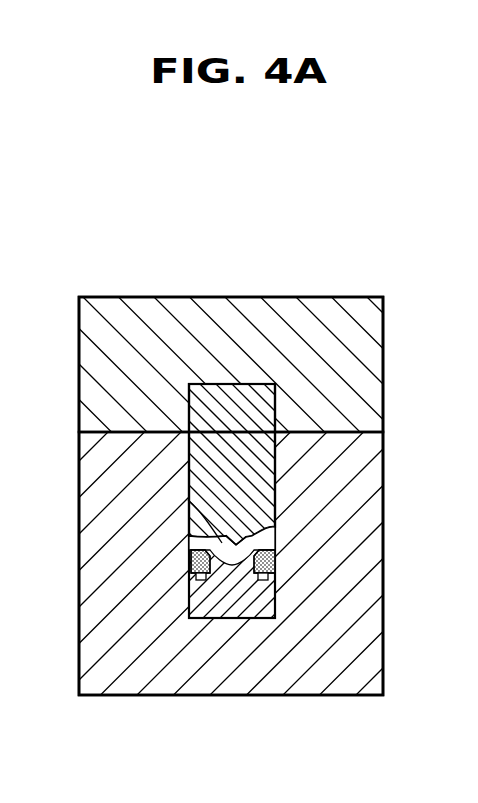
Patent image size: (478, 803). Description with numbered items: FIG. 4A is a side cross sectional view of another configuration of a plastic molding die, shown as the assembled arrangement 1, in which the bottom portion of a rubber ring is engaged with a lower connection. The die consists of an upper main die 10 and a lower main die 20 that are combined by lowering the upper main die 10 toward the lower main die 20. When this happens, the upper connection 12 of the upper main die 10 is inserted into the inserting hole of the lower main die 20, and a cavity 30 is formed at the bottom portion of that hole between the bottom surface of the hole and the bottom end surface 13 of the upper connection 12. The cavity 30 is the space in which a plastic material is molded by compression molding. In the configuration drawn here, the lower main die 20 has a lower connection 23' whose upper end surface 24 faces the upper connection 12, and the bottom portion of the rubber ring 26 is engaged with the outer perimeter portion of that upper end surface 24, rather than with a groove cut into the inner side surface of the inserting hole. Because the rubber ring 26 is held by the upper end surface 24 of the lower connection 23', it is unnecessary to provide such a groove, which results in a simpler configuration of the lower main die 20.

The molding apparatus 1 is at (352, 286).
The upper main die 10 is at (368, 356).
The upper connection 12 is at (262, 412).
The bottom end surface 13 is at (252, 540).
The lower main die 20 is at (372, 600).
The lower connection 23' is at (239, 401).
The upper end surface 24 is at (250, 552).
The rubber ring 26 is at (272, 565).
The cavity 30 is at (188, 500).